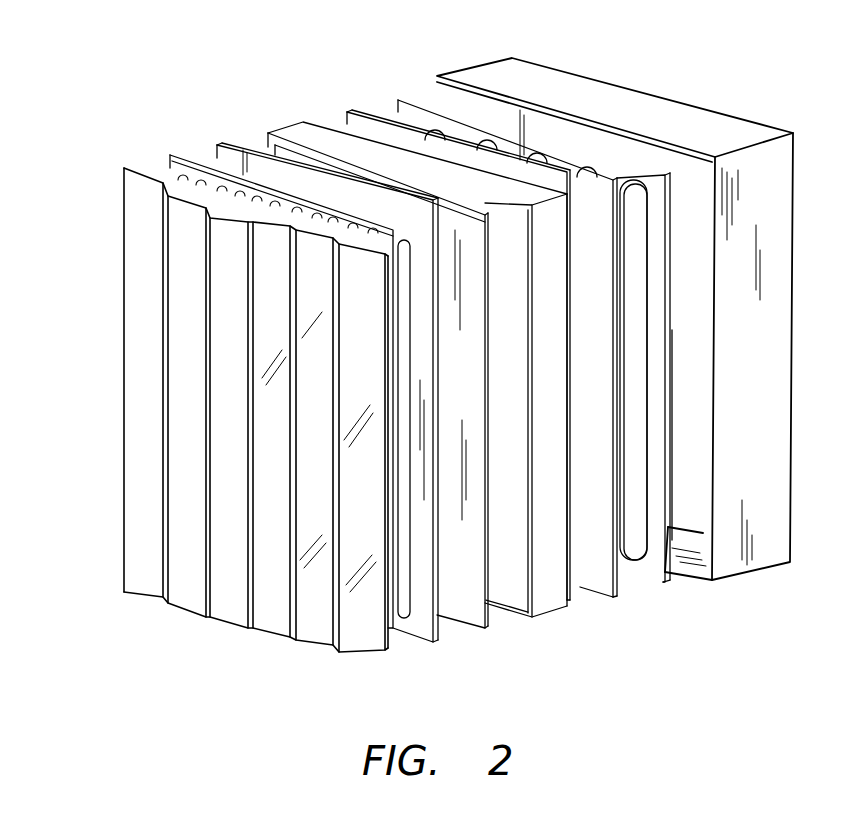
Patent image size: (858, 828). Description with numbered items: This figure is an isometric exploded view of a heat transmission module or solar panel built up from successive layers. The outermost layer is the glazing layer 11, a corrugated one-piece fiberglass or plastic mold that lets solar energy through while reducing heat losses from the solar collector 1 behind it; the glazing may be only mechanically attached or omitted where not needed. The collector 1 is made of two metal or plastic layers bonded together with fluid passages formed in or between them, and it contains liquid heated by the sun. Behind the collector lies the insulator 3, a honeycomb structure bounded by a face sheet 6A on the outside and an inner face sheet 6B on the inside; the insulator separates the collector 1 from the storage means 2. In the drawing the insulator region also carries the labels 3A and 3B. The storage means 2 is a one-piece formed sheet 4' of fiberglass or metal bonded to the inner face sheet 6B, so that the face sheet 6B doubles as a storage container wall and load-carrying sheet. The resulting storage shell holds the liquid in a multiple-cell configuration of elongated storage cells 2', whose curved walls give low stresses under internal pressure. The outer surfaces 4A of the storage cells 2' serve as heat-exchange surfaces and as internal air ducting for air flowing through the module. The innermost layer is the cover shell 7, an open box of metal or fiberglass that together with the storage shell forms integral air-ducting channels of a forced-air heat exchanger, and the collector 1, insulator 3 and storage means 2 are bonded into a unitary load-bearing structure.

The solar collector 1 is at (178, 168).
The glazing layer 11 is at (268, 612).
The face sheet 6A is at (227, 155).
The front plate of frame 3A is at (288, 128).
The insulator 3 is at (542, 617).
The frame opening bottom 3B is at (512, 595).
The inner face sheet 6B is at (353, 122).
The formed sheet 4' is at (488, 327).
The storage means 2 is at (641, 407).
The storage cells 2' is at (724, 370).
The outer surfaces of the storage cells 4A is at (672, 312).
The cover shell 7 is at (635, 112).